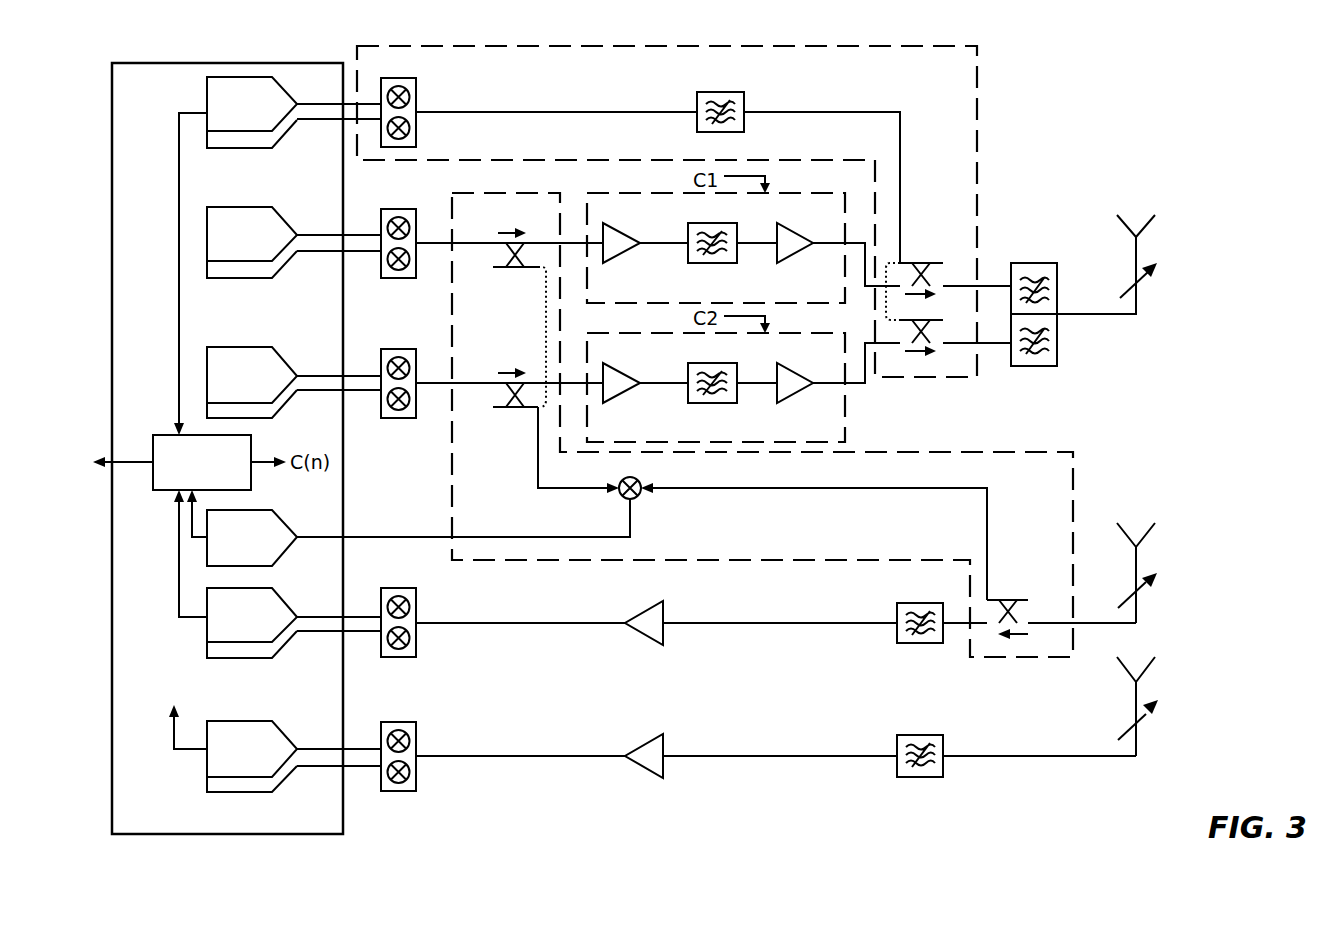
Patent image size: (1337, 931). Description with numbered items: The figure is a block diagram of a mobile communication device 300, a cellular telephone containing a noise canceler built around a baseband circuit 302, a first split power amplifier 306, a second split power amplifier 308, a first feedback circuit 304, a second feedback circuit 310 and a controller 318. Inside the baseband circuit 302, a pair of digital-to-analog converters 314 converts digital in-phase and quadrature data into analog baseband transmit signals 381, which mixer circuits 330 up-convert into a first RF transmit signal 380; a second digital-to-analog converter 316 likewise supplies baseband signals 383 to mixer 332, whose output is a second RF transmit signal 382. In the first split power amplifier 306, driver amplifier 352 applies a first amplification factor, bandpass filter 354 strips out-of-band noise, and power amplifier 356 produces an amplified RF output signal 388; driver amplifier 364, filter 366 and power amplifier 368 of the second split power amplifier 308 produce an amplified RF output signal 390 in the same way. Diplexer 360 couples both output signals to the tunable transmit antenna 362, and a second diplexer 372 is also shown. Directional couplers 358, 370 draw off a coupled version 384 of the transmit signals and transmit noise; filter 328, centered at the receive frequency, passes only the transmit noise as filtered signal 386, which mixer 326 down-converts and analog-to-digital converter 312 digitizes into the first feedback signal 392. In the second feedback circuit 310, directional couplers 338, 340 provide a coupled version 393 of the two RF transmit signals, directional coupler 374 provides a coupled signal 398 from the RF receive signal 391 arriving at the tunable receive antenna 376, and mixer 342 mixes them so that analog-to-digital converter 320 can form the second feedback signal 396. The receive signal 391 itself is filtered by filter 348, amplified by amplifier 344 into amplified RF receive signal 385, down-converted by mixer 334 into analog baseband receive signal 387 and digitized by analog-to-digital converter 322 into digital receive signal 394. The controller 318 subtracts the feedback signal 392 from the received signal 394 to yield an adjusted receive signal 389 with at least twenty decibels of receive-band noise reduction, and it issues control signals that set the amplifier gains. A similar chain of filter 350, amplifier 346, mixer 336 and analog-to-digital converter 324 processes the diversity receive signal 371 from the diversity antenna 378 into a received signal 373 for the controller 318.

The mobile communication device 300 is at (1095, 68).
The baseband circuit 302 is at (180, 63).
The first feedback circuit 304 is at (918, 46).
The first split power amplifier 306 is at (633, 193).
The second split power amplifier 308 is at (648, 333).
The second feedback circuit 310 is at (1005, 453).
The ADC 312 is at (258, 148).
The digital-to-analog converters 314 is at (258, 280).
The second DAC 316 is at (260, 347).
The controller 318 is at (251, 442).
The ADC 320 is at (262, 510).
The ADC 322 is at (240, 660).
The ADC4 324 is at (240, 793).
The mixer 326 is at (416, 95).
The filter 328 is at (705, 92).
The mixer circuits 330 is at (405, 209).
The mixers 332 is at (405, 349).
The mixer 334 is at (405, 588).
The mixer Mx5 336 is at (416, 742).
The directional coupler 338 is at (512, 268).
The directional coupler 340 is at (512, 408).
The mixer 342 is at (620, 498).
The amplifier circuit 344 is at (648, 603).
The diversity receive amplifier 346 is at (648, 736).
The filter 348 is at (928, 603).
The baseband filter BBF5 350 is at (928, 735).
The driver amplifier 352 is at (620, 228).
The filter 354 is at (702, 223).
The power amplifier 356 is at (786, 228).
The directional signal coupler 358 is at (917, 263).
The diplexer 360 is at (1025, 263).
The tunable transmit antenna 362 is at (1148, 217).
The driver amplifier 364 is at (618, 366).
The filter 366 is at (702, 363).
The power amplifier 368 is at (786, 366).
The directional signal coupler 370 is at (925, 320).
The diversity receive signal 371 is at (1017, 758).
The diplexer 372 is at (1025, 366).
The received signal 373 is at (190, 750).
The directional coupler 374 is at (1012, 600).
The tunable receive antenna 376 is at (1150, 530).
The diversity antenna 378 is at (1148, 665).
The RF transmit signal 380 is at (472, 243).
The baseband transmit signals 381 is at (323, 193).
The RF transmit signal 382 is at (468, 383).
The second I/Q baseband signal 383 is at (323, 333).
The coupled version 384 is at (820, 112).
The amplified RF receive signal 385 is at (530, 624).
The filtered signal 386 is at (527, 112).
The analog baseband receive signal 387 is at (334, 592).
The amplified RF output signal 388 is at (993, 286).
The adjusted receive signal 389 is at (122, 462).
The amplified RF output signal 390 is at (993, 343).
The RF receive signal 391 is at (1093, 625).
The first feedback signal 392 is at (193, 112).
The coupled version 393 is at (537, 462).
The digital receive signal 394 is at (190, 625).
The second feedback signal 396 is at (190, 545).
The coupled signal 398 is at (835, 488).